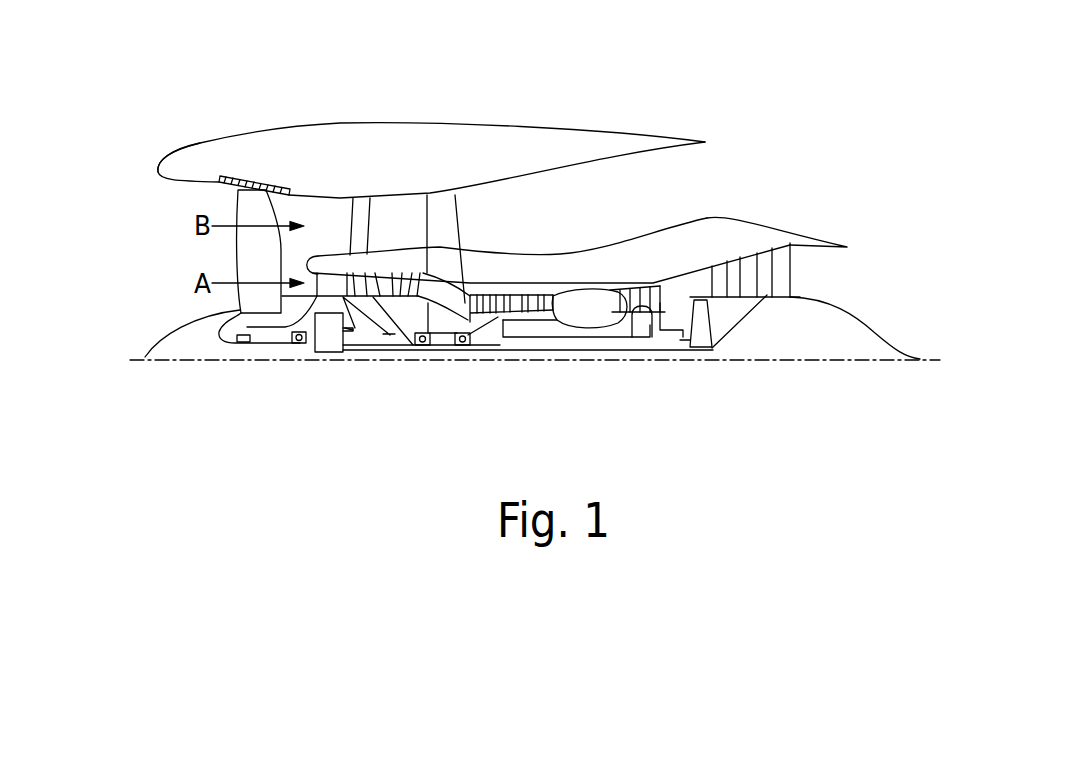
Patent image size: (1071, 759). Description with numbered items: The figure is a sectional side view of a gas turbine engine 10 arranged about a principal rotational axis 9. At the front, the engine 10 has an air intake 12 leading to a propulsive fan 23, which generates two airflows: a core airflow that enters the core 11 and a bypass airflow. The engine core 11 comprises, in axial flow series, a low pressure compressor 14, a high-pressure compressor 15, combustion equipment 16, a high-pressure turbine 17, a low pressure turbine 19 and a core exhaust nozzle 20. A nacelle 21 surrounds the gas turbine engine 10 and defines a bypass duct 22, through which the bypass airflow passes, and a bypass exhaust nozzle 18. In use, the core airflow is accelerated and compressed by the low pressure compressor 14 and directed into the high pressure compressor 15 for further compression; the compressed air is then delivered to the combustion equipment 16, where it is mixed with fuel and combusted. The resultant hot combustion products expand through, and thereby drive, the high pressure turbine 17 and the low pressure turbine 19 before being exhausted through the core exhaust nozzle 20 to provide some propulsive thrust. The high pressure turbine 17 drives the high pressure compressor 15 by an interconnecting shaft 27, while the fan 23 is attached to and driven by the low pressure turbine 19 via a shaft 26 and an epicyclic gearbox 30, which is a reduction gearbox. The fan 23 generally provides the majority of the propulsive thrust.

The principal rotational axis 9 is at (813, 362).
The gas turbine engine 10 is at (202, 137).
The core 11 is at (590, 258).
The air intake 12 is at (152, 206).
The low pressure compressor 14 is at (383, 273).
The high pressure compressor 15 is at (518, 300).
The combustion equipment 16 is at (587, 303).
The high pressure turbine 17 is at (647, 282).
The bypass exhaust nozzle 18 is at (790, 182).
The low pressure turbine 19 is at (767, 290).
The core exhaust nozzle 20 is at (830, 273).
The nacelle 21 is at (535, 150).
The bypass duct 22 is at (691, 182).
The propulsive fan 23 is at (250, 260).
The shaft 26 is at (493, 350).
The interconnecting shaft 27 is at (547, 337).
The epicyclic gearbox 30 is at (332, 337).